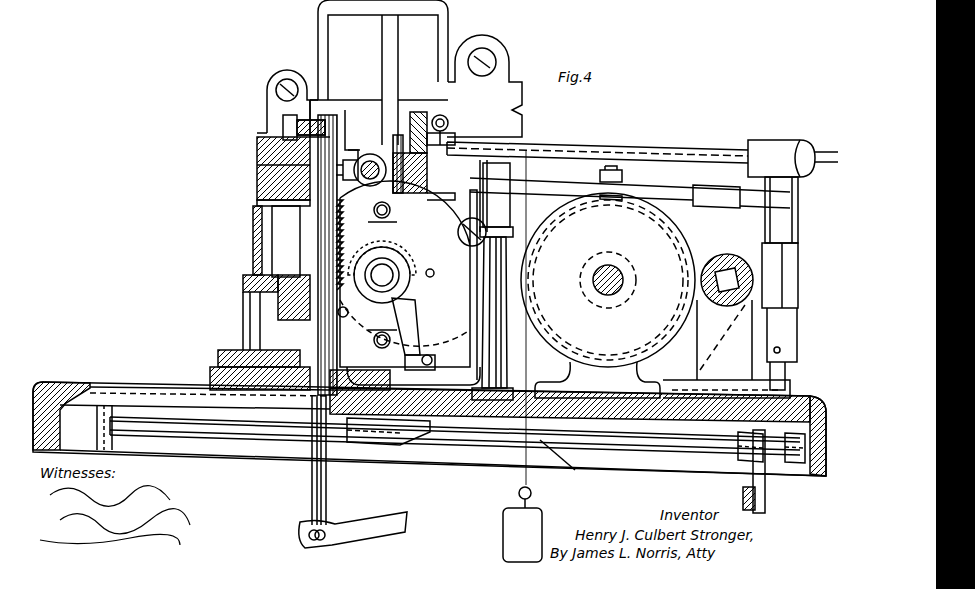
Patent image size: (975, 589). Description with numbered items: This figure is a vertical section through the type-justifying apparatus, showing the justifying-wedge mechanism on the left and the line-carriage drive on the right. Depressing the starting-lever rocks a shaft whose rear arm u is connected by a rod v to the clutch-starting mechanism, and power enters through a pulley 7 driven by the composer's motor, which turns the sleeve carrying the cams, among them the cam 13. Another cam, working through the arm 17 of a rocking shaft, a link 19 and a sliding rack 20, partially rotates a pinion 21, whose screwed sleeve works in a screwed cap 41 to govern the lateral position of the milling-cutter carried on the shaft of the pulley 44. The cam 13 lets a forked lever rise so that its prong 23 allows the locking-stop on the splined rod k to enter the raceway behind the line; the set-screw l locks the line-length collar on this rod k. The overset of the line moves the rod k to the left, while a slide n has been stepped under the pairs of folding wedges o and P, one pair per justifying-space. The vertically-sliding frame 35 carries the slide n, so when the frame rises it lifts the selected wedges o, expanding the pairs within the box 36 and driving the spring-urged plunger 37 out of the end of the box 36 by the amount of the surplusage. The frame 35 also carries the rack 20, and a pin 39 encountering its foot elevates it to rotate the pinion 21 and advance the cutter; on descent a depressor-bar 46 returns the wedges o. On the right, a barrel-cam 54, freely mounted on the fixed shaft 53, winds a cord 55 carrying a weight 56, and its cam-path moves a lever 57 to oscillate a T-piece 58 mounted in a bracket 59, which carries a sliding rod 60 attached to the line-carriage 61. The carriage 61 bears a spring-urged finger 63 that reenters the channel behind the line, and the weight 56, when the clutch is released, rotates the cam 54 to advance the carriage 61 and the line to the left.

The pulley 7 is at (559, 465).
The cam 13 is at (441, 186).
The arm 17 is at (400, 445).
The link 19 is at (326, 465).
The sliding rack 20 is at (388, 240).
The pinion 21 is at (410, 250).
The prong 23 is at (390, 280).
The vertically-sliding frame 35 is at (243, 346).
The box 36 is at (262, 178).
The spring-urged plunger 37 is at (262, 203).
The pin 39 is at (300, 392).
The screwed cap 41 is at (243, 283).
The pulley 44 is at (512, 225).
The depressor-bar 46 is at (283, 125).
The fixed shaft 53 is at (608, 296).
The barrel-cam 54 is at (655, 295).
The cord 55 is at (520, 490).
The weight 56 is at (542, 518).
The lever 57 is at (550, 190).
The T-piece 58 is at (793, 181).
The bracket 59 is at (786, 377).
The sliding rod 60 is at (640, 152).
The line-carriage 61 is at (450, 131).
The spring-urged finger 63 is at (410, 115).
The wedge P is at (260, 143).
The set-screw l is at (338, 118).
The splined rod k is at (365, 155).
The wedge o is at (276, 241).
The slide n is at (278, 310).
The arm u is at (771, 472).
The rod v is at (743, 493).